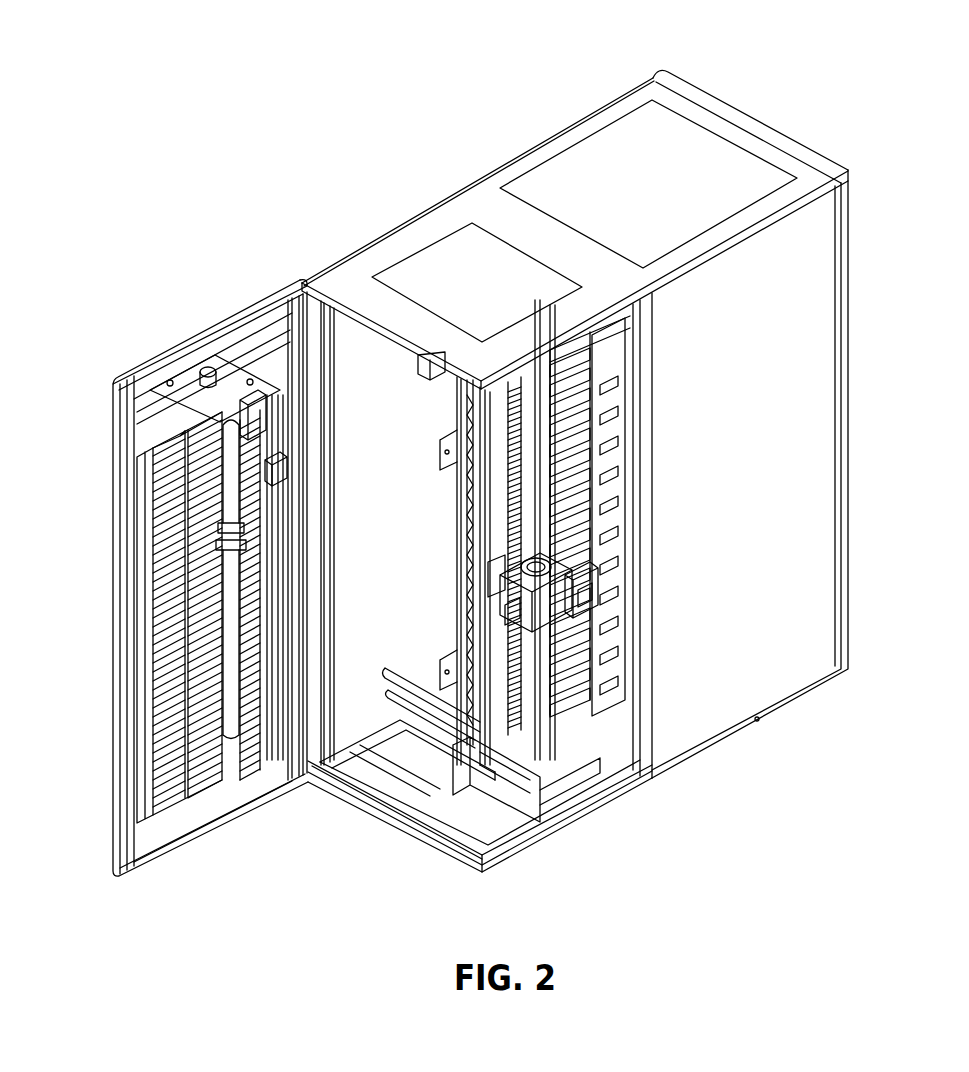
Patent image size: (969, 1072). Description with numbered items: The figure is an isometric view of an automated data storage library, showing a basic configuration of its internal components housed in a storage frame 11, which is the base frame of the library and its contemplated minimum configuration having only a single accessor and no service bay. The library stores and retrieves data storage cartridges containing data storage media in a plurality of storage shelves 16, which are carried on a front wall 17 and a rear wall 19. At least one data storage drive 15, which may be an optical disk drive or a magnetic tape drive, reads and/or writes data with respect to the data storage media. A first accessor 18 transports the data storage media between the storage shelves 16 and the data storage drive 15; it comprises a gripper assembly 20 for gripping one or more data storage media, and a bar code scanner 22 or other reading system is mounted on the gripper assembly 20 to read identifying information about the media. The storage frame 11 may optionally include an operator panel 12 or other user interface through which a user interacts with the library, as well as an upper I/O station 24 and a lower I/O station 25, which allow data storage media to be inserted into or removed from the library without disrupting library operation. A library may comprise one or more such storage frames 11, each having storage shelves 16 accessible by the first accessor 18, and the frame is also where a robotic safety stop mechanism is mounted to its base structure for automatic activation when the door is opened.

The storage frame 11 is at (818, 96).
The operator panel 12 is at (282, 388).
The data storage drive 15 is at (608, 377).
The storage shelves 16 is at (136, 702).
The front wall 17 is at (122, 556).
The first accessor 18 is at (518, 786).
The rear wall 19 is at (462, 412).
The gripper assembly 20 is at (606, 584).
The bar code scanner 22 is at (496, 616).
The upper I/O station 24 is at (258, 428).
The lower I/O station 25 is at (263, 610).